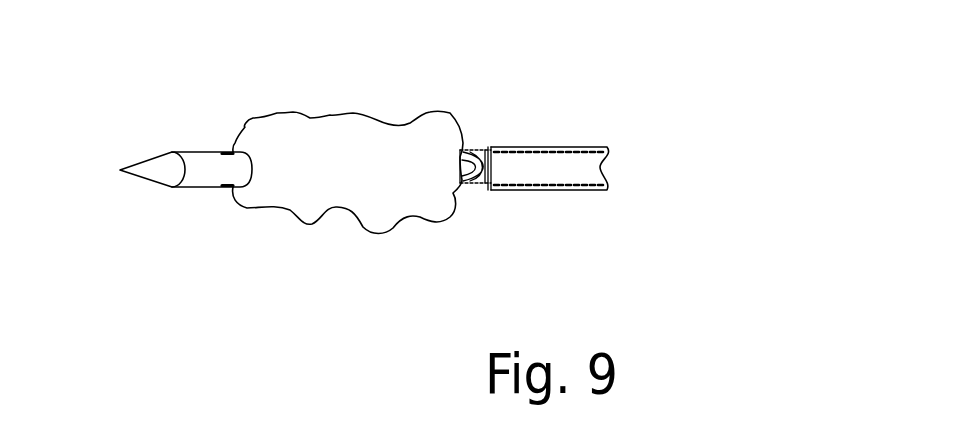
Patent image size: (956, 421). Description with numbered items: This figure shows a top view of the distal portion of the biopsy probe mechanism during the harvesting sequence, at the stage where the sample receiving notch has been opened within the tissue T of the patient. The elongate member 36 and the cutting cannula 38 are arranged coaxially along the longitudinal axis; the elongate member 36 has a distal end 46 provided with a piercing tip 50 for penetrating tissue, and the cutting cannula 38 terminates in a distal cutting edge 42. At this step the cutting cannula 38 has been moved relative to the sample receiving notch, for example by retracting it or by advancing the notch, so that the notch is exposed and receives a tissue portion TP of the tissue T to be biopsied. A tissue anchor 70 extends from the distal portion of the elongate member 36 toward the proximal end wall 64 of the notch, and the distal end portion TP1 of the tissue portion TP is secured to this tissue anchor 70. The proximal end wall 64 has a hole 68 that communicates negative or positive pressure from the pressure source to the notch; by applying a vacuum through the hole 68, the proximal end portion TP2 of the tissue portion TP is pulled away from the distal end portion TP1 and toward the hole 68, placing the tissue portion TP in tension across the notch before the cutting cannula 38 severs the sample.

The elongate member 36 is at (196, 145).
The cutting cannula 38 is at (583, 147).
The distal cutting edge 42 is at (480, 188).
The distal end 46 is at (145, 202).
The piercing tip 50 is at (120, 170).
The proximal end wall 64 is at (483, 150).
The hole 68 is at (478, 183).
The tissue anchor 70 is at (263, 167).
The tissue T is at (355, 113).
The tissue portion TP is at (322, 172).
The distal end portion TP1 is at (250, 112).
The proximal end portion TP2 is at (440, 150).